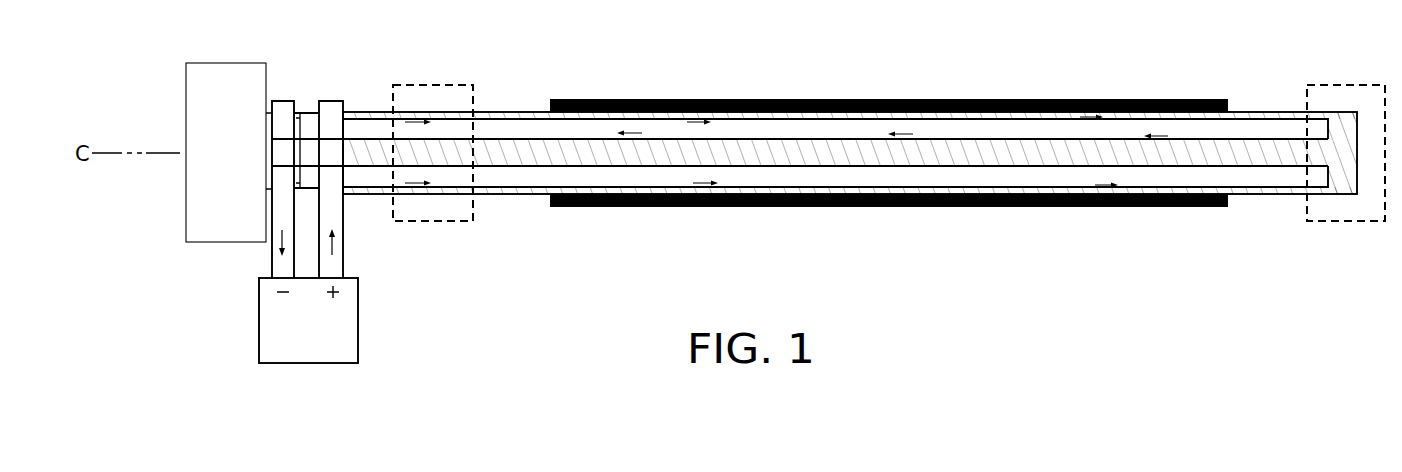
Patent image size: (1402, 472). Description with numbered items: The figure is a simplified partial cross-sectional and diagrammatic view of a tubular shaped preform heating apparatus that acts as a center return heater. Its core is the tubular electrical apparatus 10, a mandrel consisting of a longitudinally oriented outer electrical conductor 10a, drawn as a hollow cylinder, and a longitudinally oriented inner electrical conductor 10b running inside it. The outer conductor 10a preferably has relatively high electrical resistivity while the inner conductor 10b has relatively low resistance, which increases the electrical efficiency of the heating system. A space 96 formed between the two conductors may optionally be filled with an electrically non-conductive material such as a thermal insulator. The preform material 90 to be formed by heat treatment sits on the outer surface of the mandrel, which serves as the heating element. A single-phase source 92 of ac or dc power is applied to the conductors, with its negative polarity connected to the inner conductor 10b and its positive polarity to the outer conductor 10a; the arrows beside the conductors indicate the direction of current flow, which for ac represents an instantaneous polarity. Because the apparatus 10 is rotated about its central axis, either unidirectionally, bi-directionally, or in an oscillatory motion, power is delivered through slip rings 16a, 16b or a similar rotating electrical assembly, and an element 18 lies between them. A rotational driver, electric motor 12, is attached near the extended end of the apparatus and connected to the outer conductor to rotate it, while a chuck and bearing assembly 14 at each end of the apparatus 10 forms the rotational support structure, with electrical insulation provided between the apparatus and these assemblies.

The tubular electrical apparatus 10 is at (850, 292).
The outer electrical conductor 10a is at (502, 115).
The inner electrical conductor 10b is at (515, 157).
The electric motor 12 is at (235, 163).
The chuck and bearing assembly 14 is at (442, 92).
The slip ring 16a is at (335, 105).
The slip ring 16b is at (282, 110).
The insulator 18 is at (308, 113).
The preform material 90 is at (1023, 100).
The single-phase source of electric power 92 is at (324, 333).
The space 96 is at (542, 175).